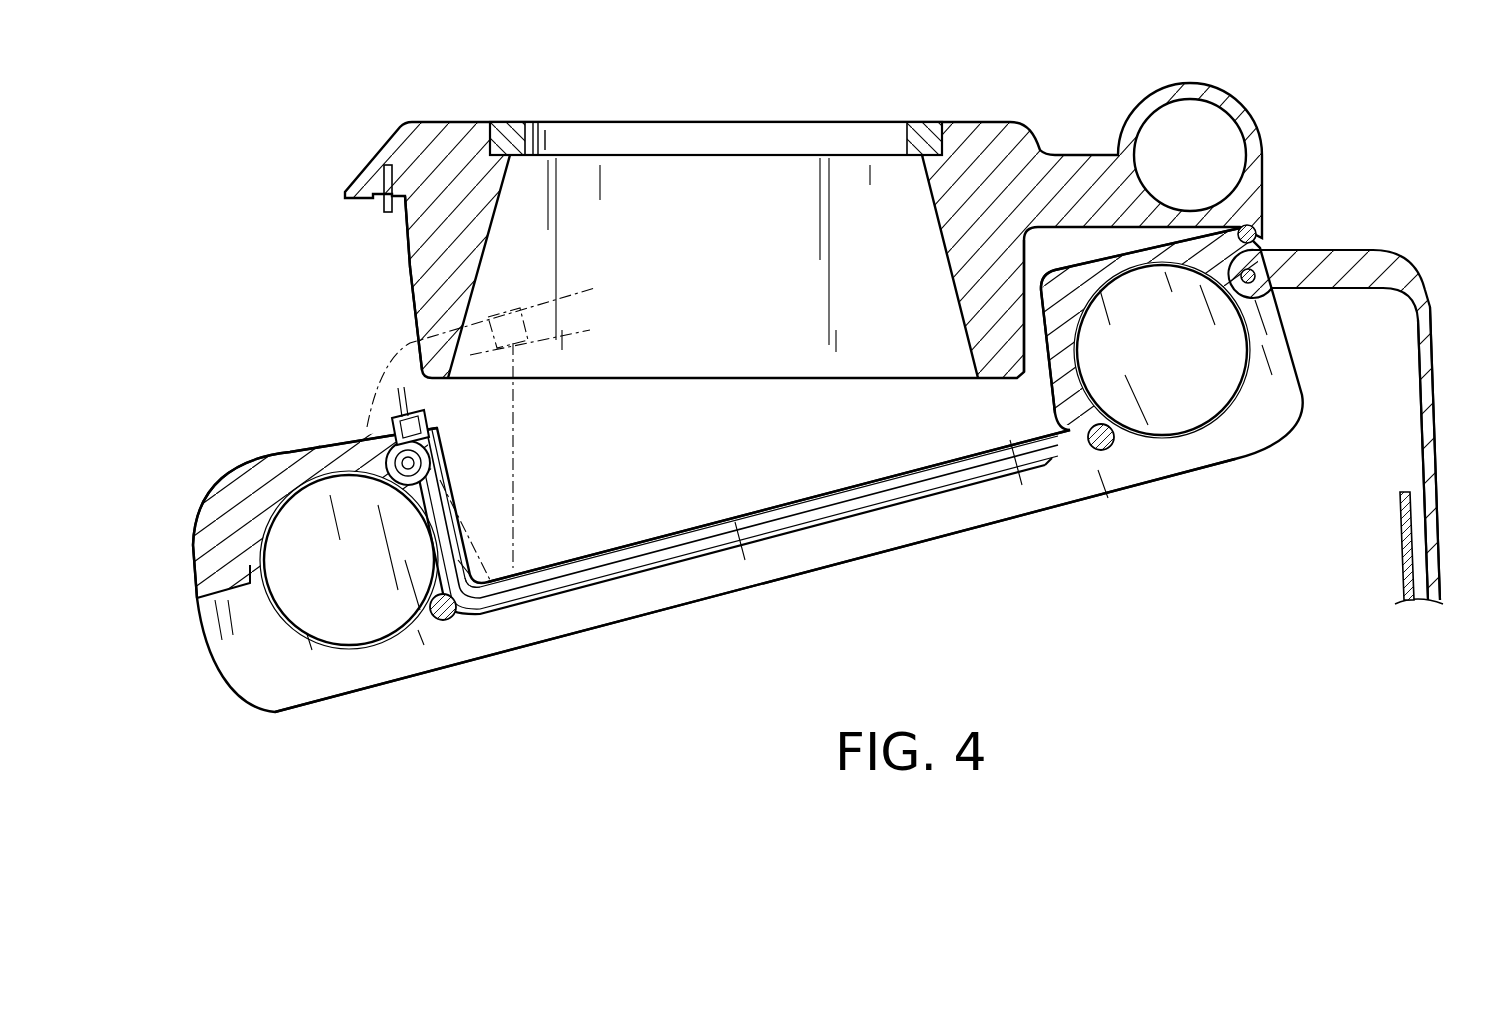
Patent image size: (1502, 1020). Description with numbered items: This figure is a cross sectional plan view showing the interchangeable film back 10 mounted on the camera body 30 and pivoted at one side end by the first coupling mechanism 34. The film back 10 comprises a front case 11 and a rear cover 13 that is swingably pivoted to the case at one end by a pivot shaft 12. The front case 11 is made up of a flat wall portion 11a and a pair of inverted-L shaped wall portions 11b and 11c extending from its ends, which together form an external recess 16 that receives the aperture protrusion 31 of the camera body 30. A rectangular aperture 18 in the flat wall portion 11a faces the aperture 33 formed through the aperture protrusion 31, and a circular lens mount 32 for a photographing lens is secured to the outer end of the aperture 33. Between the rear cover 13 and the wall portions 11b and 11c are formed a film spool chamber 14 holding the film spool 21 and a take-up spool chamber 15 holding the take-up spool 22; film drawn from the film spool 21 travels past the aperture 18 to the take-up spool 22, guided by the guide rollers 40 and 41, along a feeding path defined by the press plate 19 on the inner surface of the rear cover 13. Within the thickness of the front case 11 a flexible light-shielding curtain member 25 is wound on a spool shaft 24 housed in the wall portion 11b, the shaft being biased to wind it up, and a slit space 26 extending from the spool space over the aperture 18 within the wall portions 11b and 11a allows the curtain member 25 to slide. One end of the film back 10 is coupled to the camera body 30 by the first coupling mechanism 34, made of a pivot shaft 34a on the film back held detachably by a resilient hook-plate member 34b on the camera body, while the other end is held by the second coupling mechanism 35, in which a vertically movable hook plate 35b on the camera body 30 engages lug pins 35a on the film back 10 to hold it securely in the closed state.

The interchangeable film back 10 is at (1369, 232).
The front case 11 is at (195, 562).
The flat wall portion 11a is at (738, 516).
The inverted-L shaped wall portion 11b is at (290, 452).
The inverted-L shaped wall portion 11c is at (1110, 258).
The pivot shaft 12 is at (1270, 292).
The rear cover 13 is at (1432, 552).
The film spool chamber 14 is at (277, 550).
The take-up spool chamber 15 is at (1187, 277).
The external recess 16 is at (1055, 388).
The rectangular aperture 18 is at (1020, 458).
The press plate 19 is at (1400, 509).
The film spool 21 is at (343, 607).
The take-up spool 22 is at (1198, 382).
The spool shaft 24 is at (432, 455).
The light-shielding curtain member 25 is at (460, 538).
The slit space 26 is at (878, 490).
The camera body 30 is at (896, 84).
The aperture protrusion 31 is at (435, 285).
The circular lens mount 32 is at (548, 122).
The aperture 33 is at (962, 335).
The first coupling mechanism 34 is at (1268, 220).
The pivot shaft 34a is at (1244, 224).
The resilient hook-plate member 34b is at (1265, 252).
The second coupling mechanism 35 is at (335, 305).
The lug pins 35a is at (398, 418).
The hook plate 35b is at (385, 208).
The guide roller 40 is at (440, 622).
The guide roller 41 is at (1106, 452).